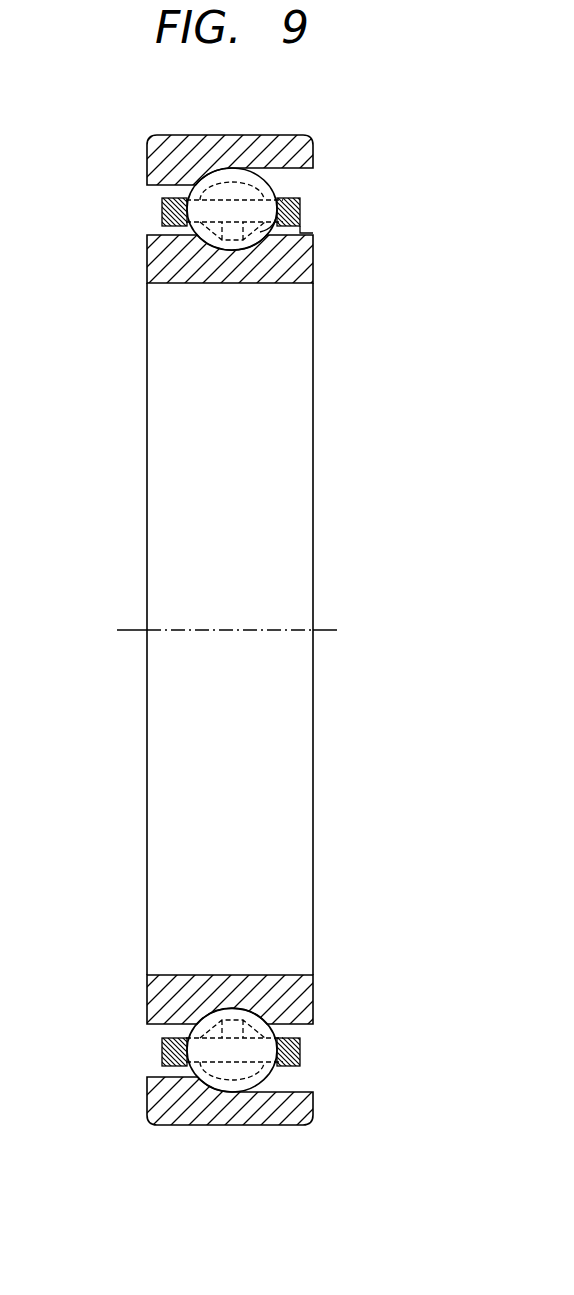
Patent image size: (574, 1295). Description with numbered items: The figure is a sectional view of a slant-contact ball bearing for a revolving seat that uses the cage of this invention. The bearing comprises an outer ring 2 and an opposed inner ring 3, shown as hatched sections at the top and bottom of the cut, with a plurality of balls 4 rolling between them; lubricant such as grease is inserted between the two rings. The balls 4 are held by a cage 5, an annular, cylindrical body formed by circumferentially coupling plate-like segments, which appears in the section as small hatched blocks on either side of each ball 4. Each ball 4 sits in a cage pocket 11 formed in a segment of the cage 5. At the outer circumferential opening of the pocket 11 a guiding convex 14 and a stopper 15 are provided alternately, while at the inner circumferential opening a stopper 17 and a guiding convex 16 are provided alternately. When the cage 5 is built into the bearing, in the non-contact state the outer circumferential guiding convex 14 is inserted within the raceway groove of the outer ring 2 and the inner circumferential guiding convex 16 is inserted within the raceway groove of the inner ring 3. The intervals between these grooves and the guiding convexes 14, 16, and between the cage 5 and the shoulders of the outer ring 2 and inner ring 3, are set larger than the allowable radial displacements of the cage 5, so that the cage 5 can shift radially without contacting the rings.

The outer ring 2 is at (277, 136).
The inner ring 3 is at (270, 273).
The ball 4 is at (207, 172).
The cage 5 is at (300, 212).
The cage pocket 11 is at (272, 245).
The guiding convex 14 is at (234, 168).
The stopper 15 is at (265, 183).
The guiding convex 16 is at (200, 250).
The stopper 17 is at (255, 1025).